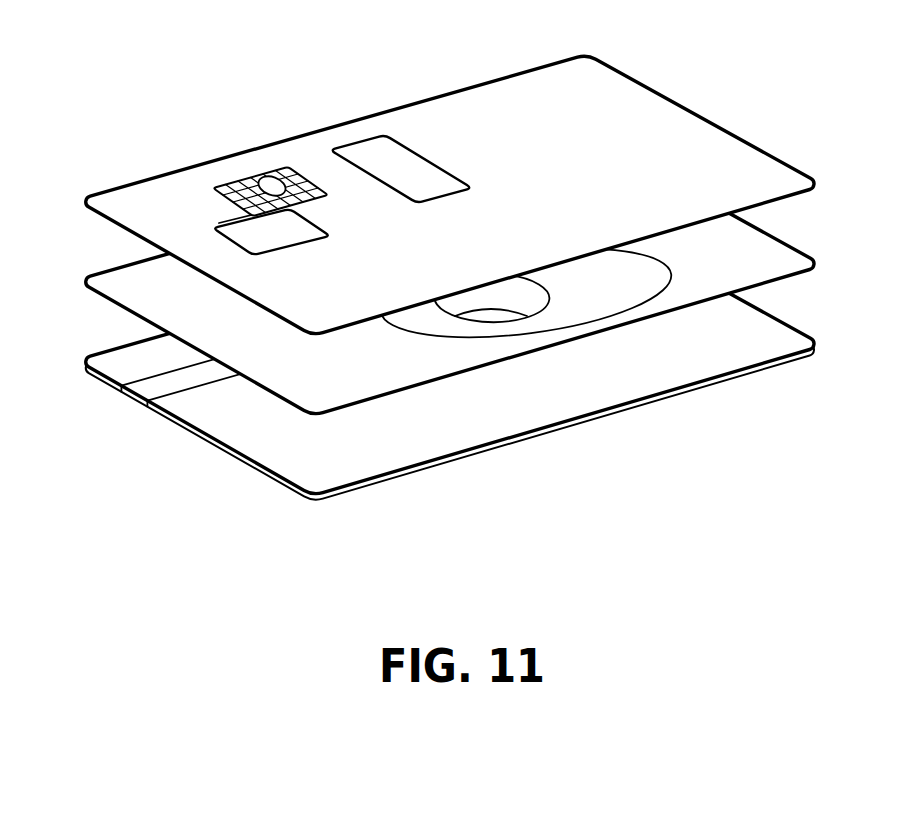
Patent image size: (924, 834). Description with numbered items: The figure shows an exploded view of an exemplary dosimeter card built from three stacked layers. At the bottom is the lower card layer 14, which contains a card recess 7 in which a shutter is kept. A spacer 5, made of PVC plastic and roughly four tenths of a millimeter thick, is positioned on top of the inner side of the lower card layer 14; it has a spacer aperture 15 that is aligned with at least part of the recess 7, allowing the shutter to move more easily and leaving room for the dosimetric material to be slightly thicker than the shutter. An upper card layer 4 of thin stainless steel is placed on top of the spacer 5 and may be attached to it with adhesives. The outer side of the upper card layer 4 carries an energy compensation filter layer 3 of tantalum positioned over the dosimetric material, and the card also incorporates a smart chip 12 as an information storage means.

The energy compensation filter layer 3 is at (380, 152).
The upper card layer 4 is at (423, 175).
The spacer 5 is at (472, 273).
The card recess 7 is at (132, 390).
The smart chip 12 is at (247, 188).
The lower card layer 14 is at (460, 357).
The spacer aperture 15 is at (588, 287).